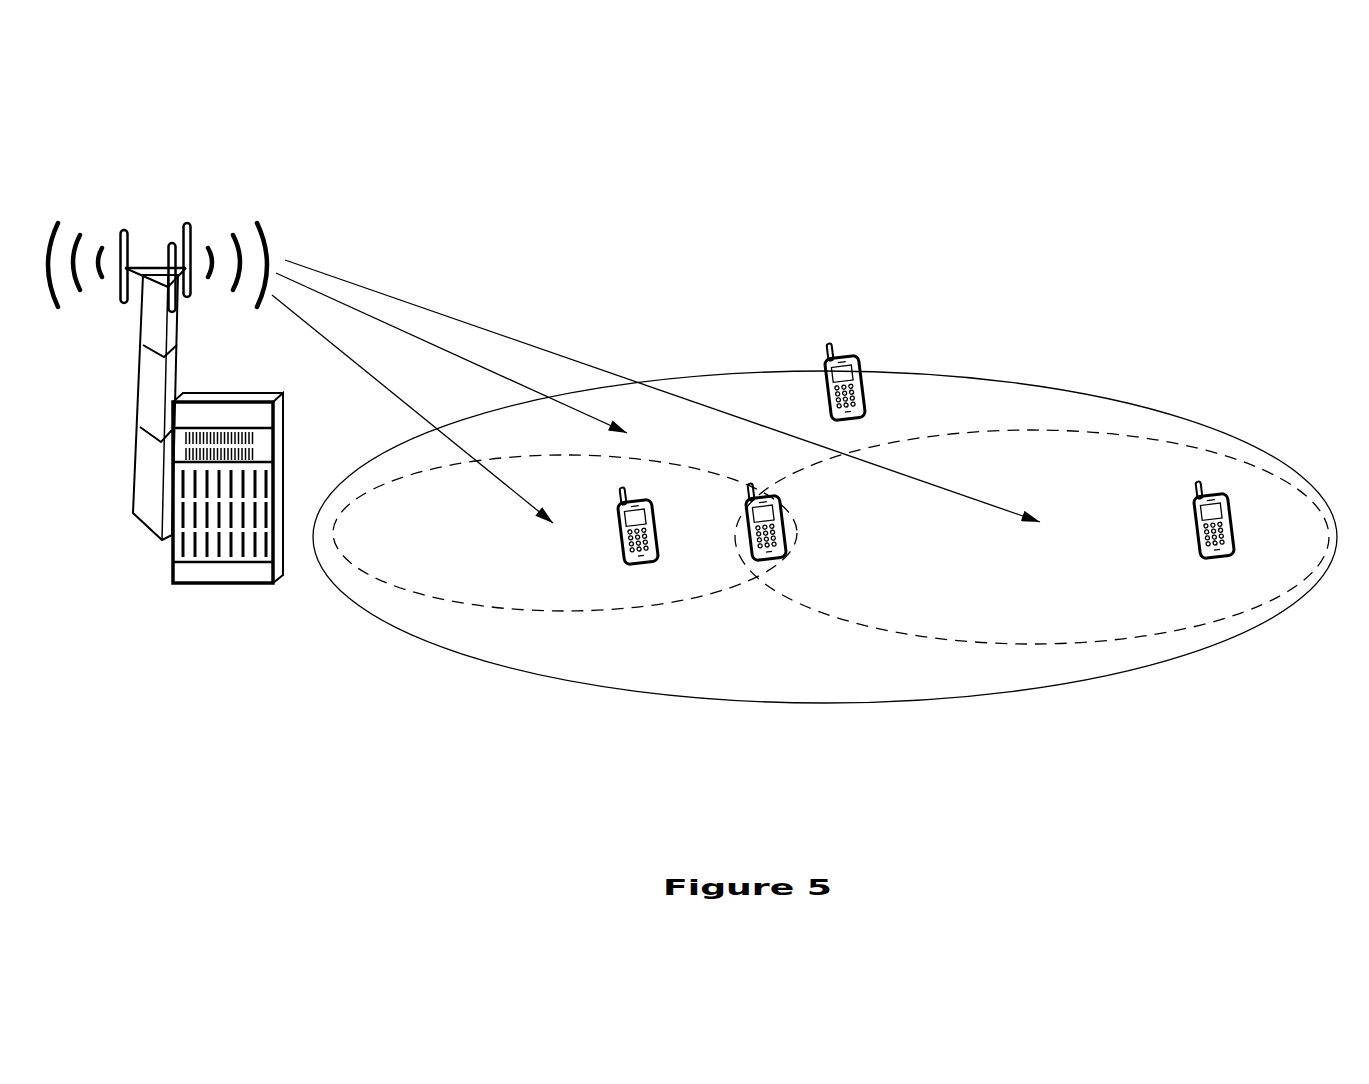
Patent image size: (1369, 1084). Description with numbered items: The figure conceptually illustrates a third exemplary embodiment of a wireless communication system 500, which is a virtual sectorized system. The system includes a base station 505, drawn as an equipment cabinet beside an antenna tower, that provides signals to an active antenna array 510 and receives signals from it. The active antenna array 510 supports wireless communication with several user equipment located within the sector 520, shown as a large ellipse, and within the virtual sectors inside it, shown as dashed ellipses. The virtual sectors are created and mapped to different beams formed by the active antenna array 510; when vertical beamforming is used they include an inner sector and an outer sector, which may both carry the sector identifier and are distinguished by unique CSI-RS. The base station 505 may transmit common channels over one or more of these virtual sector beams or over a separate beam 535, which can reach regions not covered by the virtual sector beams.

The wireless communication system 500 is at (1215, 182).
The base station 505 is at (212, 588).
The active antenna array 510 is at (163, 203).
The sector 520 is at (1227, 425).
The separate beam 535 is at (385, 322).